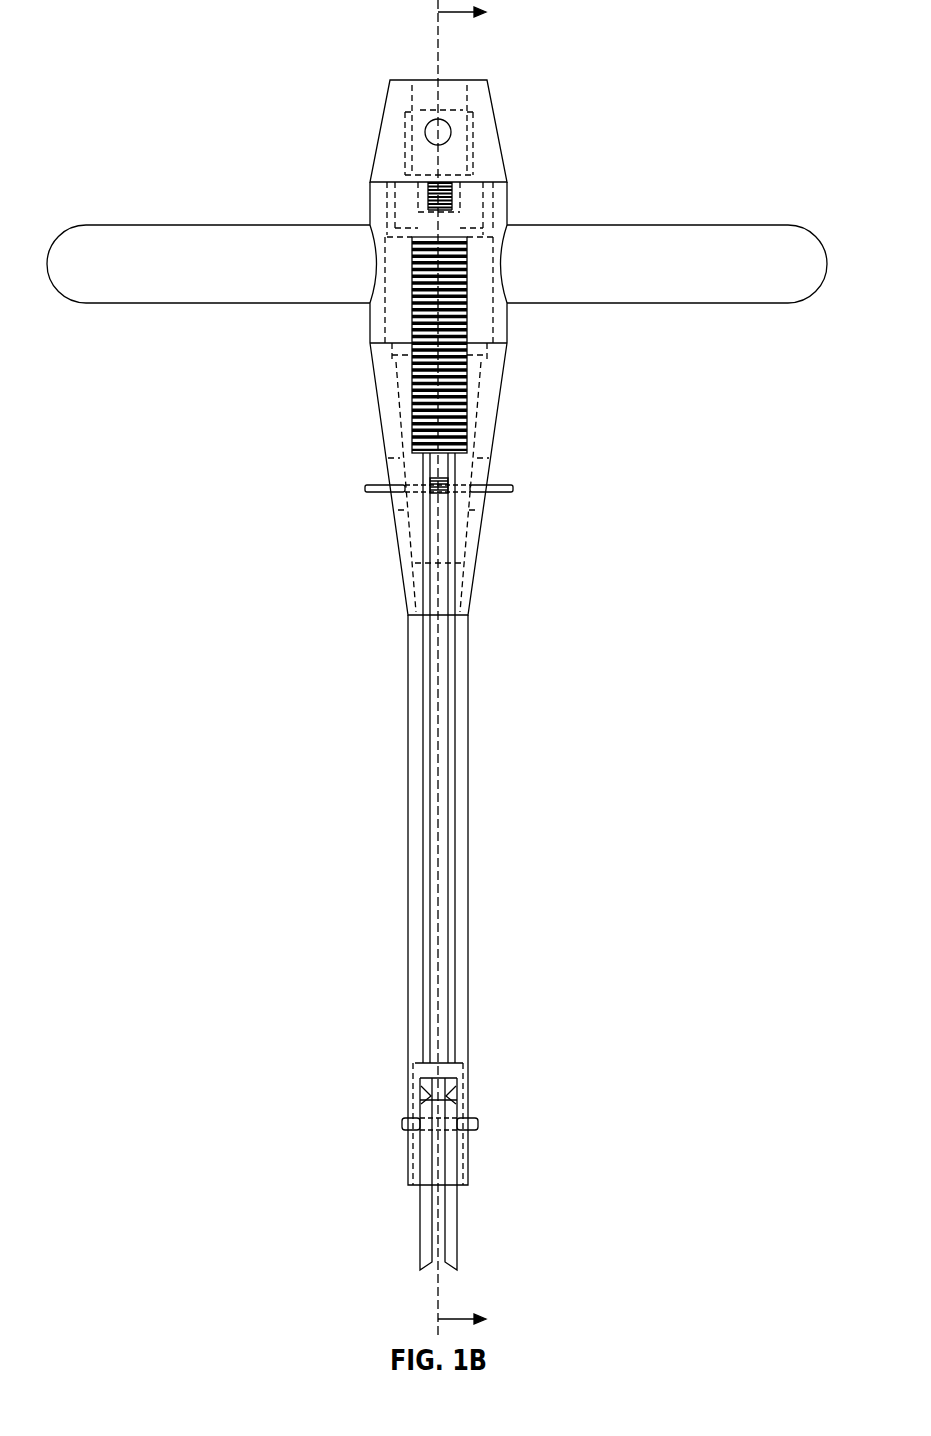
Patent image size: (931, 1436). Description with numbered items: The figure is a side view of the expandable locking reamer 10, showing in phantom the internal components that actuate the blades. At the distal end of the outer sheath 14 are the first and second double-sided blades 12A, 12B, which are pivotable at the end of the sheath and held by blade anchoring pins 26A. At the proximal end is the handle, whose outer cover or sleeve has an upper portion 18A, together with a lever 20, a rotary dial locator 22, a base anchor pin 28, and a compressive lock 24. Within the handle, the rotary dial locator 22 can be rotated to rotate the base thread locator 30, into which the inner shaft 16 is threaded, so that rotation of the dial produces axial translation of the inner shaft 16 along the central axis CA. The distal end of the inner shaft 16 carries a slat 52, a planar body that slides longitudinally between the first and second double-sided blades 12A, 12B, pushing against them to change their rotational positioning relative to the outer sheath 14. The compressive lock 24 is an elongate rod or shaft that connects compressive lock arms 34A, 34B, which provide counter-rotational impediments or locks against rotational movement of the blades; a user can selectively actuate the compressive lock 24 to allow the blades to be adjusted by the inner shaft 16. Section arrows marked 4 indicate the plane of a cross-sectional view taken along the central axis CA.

The expandable locking reamer 10 is at (225, 80).
The first double-sided blade 12A is at (447, 1208).
The second double-sided blade 12B is at (426, 1210).
The outer sheath 14 is at (415, 675).
The inner shaft 16 is at (437, 758).
The upper portion 18A is at (510, 328).
The lever 20 is at (145, 240).
The rotary dial locator 22 is at (411, 130).
The compressive lock 24 is at (365, 488).
The blade anchoring pin 26A is at (403, 1122).
The base anchor pin 28 is at (424, 121).
The base thread locator 30 is at (395, 318).
The first compressive lock arm 34A is at (455, 928).
The second compressive lock arm 34B is at (428, 960).
The slat 52 is at (437, 1138).
The central axis CA is at (437, 35).
The section line for FIG. 4 is at (471, 667).